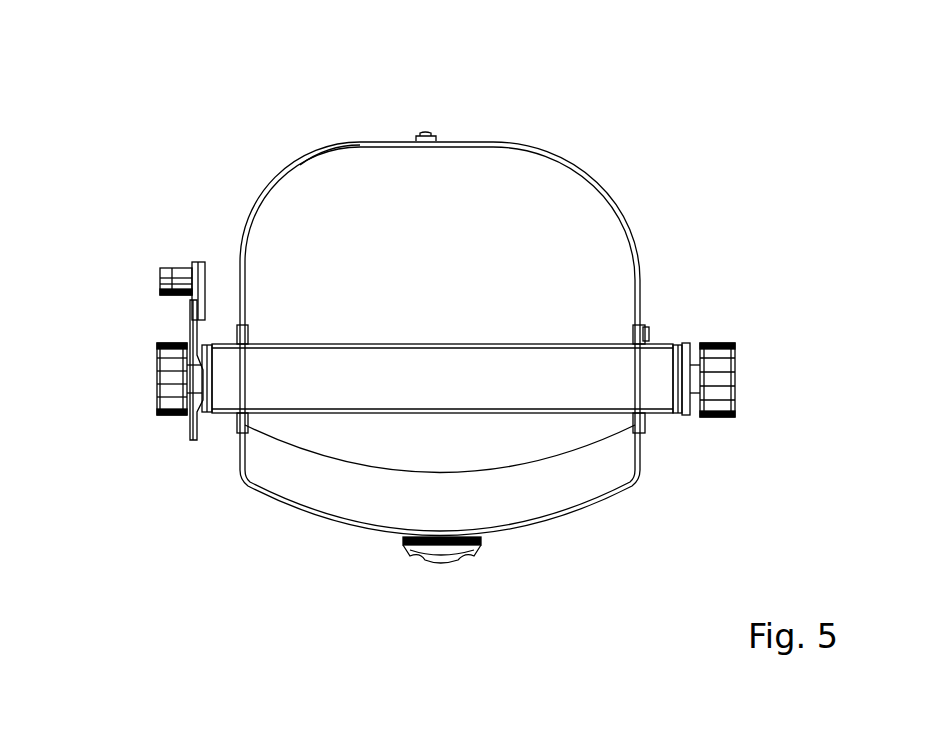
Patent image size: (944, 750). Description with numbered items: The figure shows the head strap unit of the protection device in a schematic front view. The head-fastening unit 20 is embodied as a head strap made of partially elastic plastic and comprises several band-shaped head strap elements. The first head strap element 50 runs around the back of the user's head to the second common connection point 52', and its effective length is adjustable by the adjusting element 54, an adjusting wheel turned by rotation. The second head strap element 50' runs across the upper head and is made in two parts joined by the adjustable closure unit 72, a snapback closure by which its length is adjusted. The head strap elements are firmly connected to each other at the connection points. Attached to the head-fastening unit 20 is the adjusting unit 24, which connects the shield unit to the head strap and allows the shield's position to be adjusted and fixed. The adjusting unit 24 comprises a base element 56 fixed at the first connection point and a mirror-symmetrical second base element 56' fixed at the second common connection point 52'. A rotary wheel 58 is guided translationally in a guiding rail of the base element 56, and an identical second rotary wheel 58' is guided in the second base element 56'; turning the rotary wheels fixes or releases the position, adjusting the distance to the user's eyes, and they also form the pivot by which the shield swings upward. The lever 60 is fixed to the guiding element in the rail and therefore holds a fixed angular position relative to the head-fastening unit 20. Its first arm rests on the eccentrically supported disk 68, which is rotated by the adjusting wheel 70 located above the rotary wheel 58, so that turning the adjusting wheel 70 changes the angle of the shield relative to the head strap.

The head-fastening unit 20 is at (668, 230).
The adjusting unit 24 is at (137, 366).
The first head strap element 50 is at (440, 511).
The second head strap element 50' is at (409, 113).
The second common connection point 52' is at (711, 309).
The adjusting element 54 is at (452, 550).
The base element 56 is at (216, 431).
The second base element 56' is at (687, 432).
The rotary wheel 58 is at (136, 379).
The second rotary wheel 58' is at (763, 380).
The lever 60 is at (181, 333).
The eccentrically supported disk 68 is at (205, 264).
The adjusting wheel 70 is at (178, 267).
The adjustable closure unit 72 is at (432, 131).